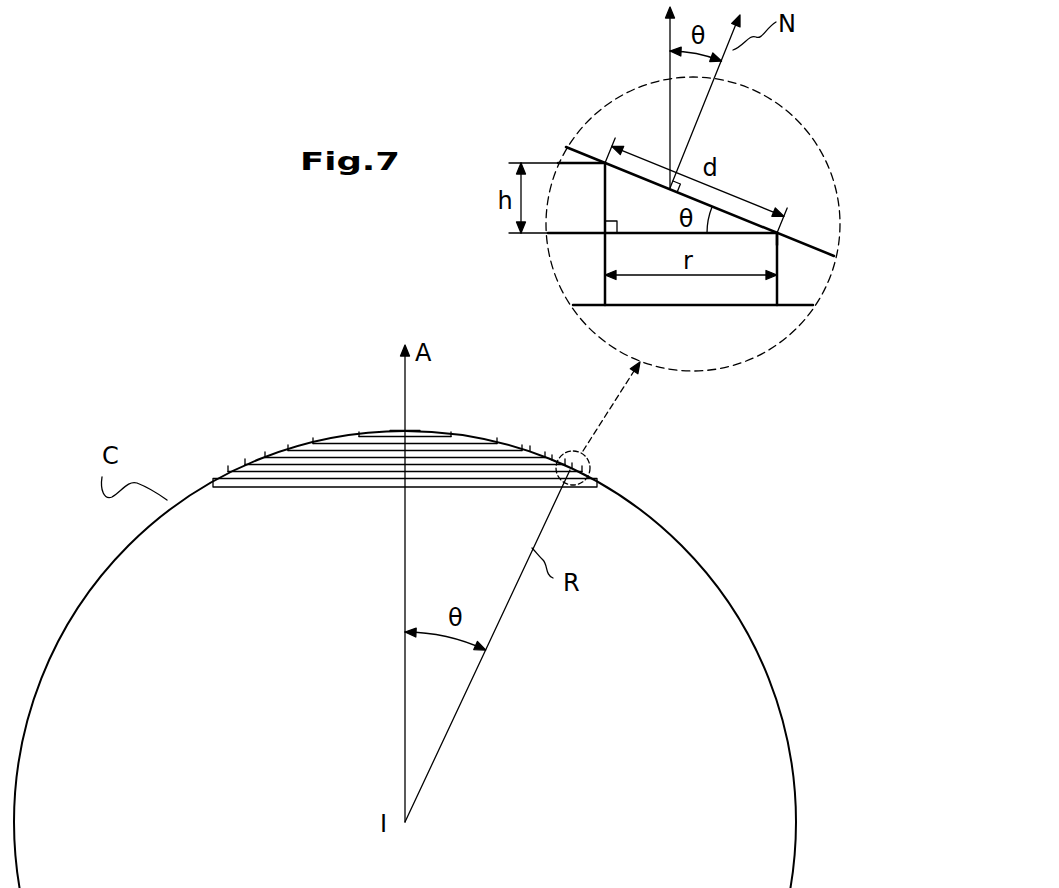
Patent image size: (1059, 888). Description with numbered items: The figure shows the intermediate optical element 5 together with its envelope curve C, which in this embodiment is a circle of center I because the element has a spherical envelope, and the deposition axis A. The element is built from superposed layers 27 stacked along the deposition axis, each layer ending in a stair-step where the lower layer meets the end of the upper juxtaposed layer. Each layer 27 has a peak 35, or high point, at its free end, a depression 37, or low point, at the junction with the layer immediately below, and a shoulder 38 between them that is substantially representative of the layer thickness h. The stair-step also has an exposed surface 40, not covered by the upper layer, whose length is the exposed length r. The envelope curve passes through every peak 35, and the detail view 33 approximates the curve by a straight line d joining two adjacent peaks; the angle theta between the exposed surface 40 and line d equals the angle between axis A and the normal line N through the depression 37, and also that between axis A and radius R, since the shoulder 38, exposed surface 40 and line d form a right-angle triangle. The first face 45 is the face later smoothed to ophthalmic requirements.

The intermediate optical element 5 is at (225, 447).
The superposed layers 27 is at (270, 458).
The peak 35 is at (572, 465).
The step detail 33 is at (772, 138).
The depression 37 is at (603, 237).
The shoulder 38 is at (602, 208).
The exposed surface 40 is at (738, 235).
The first face 45 is at (808, 244).